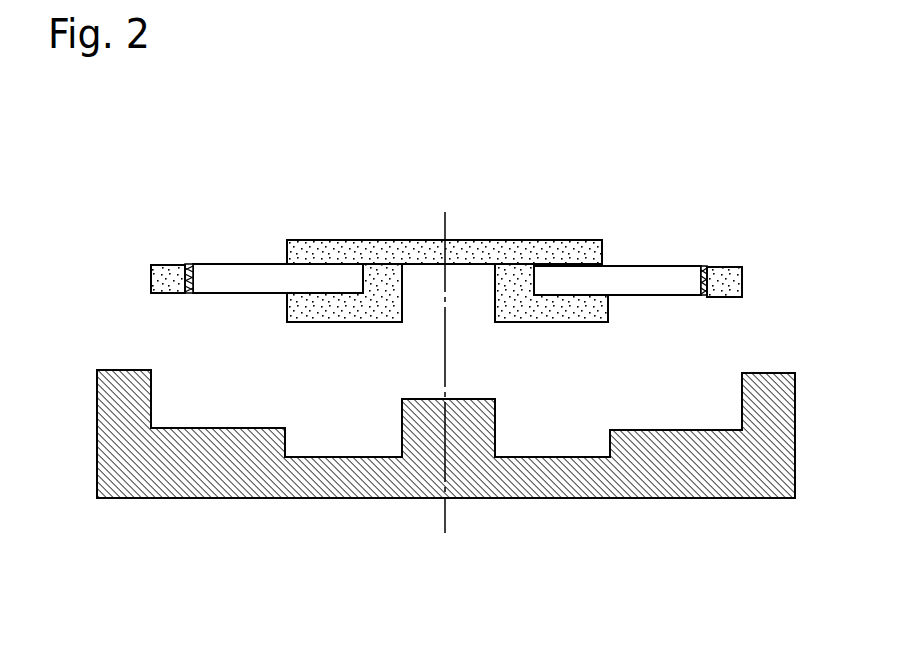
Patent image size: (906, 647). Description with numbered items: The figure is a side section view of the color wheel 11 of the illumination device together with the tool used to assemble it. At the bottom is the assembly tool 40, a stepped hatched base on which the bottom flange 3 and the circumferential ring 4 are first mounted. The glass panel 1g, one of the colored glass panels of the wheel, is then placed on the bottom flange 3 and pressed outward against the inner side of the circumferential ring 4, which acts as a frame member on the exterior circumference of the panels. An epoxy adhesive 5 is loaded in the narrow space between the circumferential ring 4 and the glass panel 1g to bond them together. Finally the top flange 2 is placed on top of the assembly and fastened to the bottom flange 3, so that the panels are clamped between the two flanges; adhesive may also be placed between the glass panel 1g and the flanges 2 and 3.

The color wheel 11 is at (128, 141).
The glass panel 1g is at (247, 275).
The top flange 2 is at (340, 248).
The bottom flange 3 is at (310, 313).
The circumferential ring 4 is at (168, 275).
The epoxy adhesive 5 is at (188, 262).
The assembly tool 40 is at (517, 487).